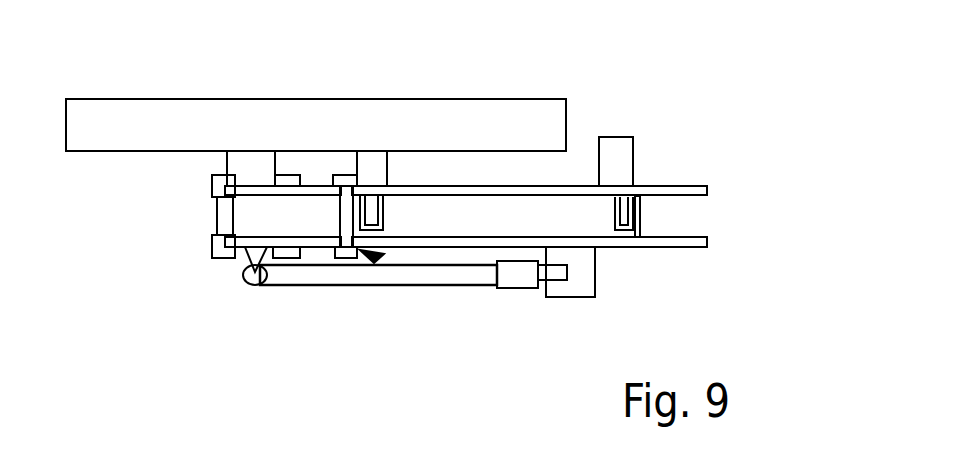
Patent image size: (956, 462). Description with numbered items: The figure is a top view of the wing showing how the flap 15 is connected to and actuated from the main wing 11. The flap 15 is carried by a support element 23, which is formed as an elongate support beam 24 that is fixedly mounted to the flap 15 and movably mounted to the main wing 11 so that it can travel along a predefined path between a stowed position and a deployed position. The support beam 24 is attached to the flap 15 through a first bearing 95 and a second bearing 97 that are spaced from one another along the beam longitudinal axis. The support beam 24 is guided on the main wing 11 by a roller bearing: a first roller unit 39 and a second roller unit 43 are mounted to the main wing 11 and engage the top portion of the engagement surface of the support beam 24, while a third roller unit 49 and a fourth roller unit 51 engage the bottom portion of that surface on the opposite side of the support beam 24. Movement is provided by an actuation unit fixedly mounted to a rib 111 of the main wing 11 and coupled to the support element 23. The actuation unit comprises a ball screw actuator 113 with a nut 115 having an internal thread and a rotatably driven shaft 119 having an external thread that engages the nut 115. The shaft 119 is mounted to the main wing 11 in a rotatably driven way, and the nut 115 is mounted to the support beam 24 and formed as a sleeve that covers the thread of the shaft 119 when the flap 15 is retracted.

The flap 15 is at (108, 135).
The first bearing 95 is at (237, 165).
The third roller unit 49 is at (289, 179).
The second bearing 97 is at (387, 163).
The support element 23 is at (545, 218).
The support beam 24 is at (490, 216).
The rib 111 is at (668, 185).
The main wing 11 is at (632, 325).
The first roller unit 39 is at (223, 222).
The second roller unit 43 is at (343, 238).
The ball screw actuator 113 is at (368, 273).
The fourth roller unit 51 is at (380, 259).
The nut 115 is at (461, 273).
The shaft 119 is at (552, 272).